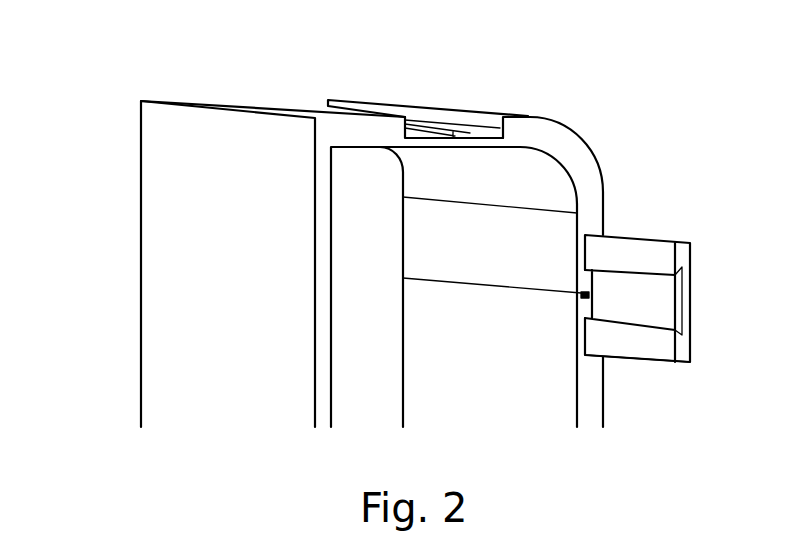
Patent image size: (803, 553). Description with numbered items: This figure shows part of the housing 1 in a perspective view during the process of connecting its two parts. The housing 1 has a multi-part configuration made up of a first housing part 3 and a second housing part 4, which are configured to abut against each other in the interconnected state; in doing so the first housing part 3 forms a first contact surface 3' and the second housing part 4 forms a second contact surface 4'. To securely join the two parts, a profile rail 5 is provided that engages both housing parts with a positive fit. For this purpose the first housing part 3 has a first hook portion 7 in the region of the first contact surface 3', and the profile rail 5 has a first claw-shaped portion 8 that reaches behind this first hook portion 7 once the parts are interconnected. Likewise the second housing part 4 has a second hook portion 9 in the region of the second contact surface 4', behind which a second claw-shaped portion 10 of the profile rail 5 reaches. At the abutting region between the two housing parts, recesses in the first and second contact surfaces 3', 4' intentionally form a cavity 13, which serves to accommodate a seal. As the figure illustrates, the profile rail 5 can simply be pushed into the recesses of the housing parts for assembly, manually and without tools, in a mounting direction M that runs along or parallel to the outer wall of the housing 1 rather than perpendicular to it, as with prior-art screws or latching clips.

The housing 1 is at (125, 90).
The first housing part 3 is at (394, 236).
The first contact surface 3' is at (490, 295).
The second housing part 4 is at (467, 246).
The second contact surface 4' is at (492, 234).
The profile rail 5 is at (662, 293).
The first hook portion 7 is at (415, 124).
The first claw-shaped portion 8 is at (648, 334).
The second hook portion 9 is at (490, 126).
The second claw-shaped portion 10 is at (649, 261).
The cavity 13 is at (598, 291).
The mounting direction M is at (639, 305).